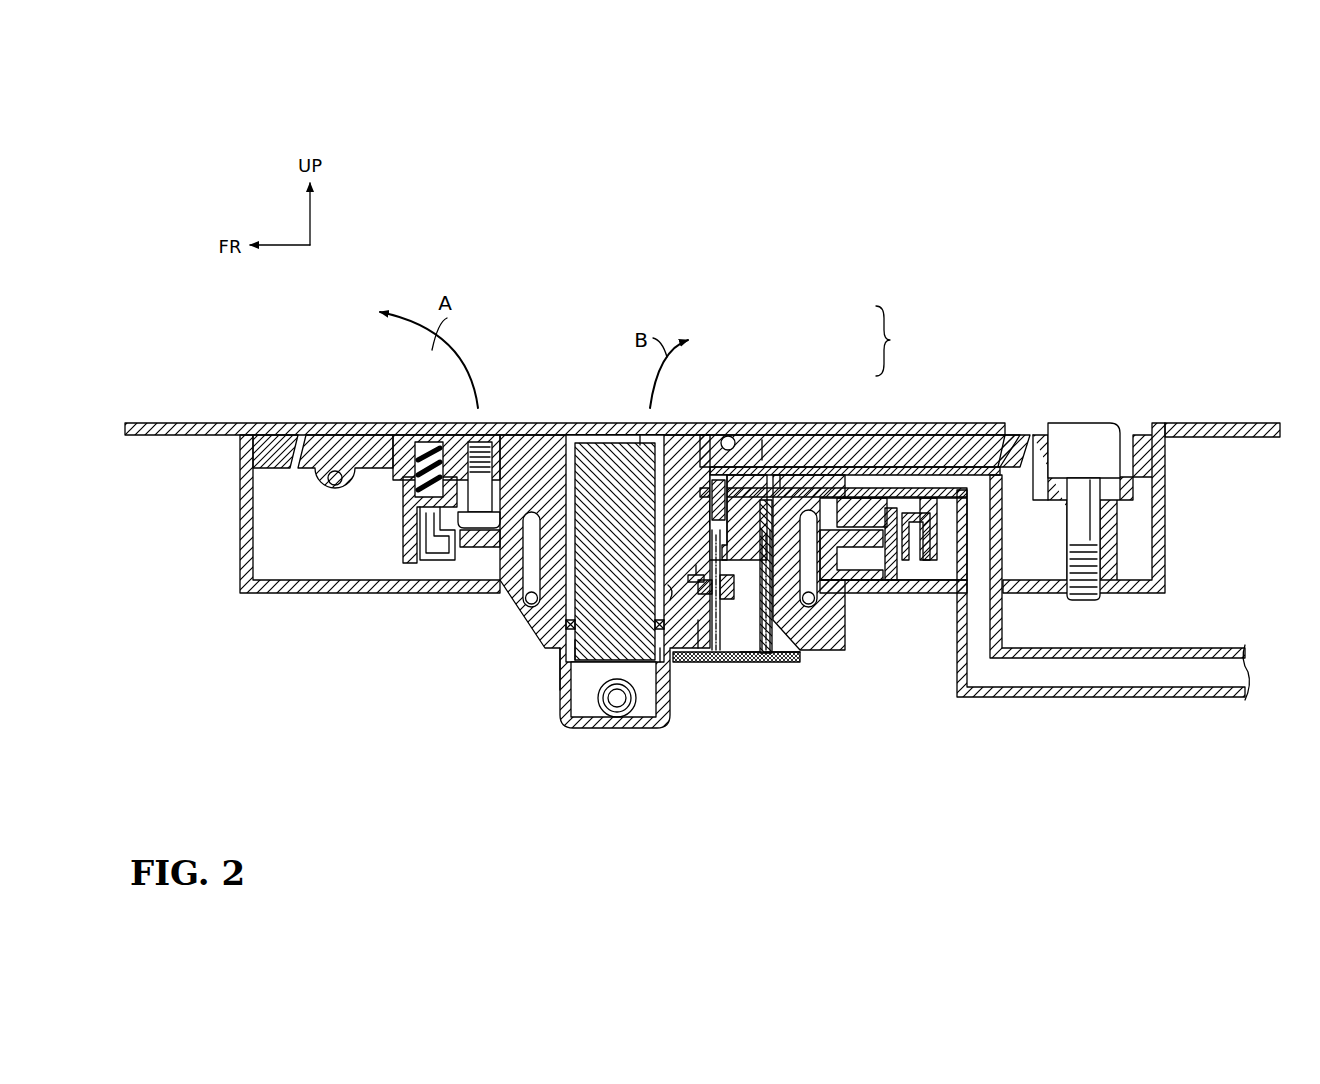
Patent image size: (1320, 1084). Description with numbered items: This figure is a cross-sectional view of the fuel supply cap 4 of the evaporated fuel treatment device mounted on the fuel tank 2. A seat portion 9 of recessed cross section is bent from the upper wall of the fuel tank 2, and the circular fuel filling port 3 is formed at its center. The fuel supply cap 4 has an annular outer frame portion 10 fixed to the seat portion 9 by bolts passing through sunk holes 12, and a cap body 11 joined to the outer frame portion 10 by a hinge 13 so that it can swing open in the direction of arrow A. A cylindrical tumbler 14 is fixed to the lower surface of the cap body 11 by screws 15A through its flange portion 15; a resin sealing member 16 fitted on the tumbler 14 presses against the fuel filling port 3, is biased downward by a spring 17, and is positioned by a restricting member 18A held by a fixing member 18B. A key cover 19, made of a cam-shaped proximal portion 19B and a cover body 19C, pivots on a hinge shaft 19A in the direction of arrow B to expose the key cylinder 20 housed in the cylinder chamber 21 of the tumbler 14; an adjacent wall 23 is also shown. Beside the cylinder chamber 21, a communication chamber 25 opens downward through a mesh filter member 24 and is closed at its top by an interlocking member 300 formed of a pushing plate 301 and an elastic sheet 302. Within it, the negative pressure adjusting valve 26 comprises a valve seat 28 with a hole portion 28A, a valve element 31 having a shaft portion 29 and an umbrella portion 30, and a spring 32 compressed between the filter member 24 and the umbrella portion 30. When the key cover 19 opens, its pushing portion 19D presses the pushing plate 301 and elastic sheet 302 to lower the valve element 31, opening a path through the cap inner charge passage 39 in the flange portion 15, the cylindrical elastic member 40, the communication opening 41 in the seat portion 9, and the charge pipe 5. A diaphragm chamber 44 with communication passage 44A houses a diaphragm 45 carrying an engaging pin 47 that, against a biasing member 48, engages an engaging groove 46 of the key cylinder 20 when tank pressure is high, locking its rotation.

The fuel tank 2 is at (198, 423).
The fuel filling port 3 is at (510, 612).
The fuel supply cap 4 is at (946, 410).
The charge pipe 5 is at (1122, 698).
The seat portion 9 is at (312, 593).
The outer frame portion 10 is at (272, 435).
The cap body 11 is at (343, 435).
The sunk hole 12 is at (1100, 450).
The hinge 13 is at (331, 485).
The tumbler 14 is at (568, 632).
The flange portion 15 is at (525, 468).
The screw 15A is at (512, 480).
The sealing member 16 is at (820, 632).
The spring 17 is at (547, 630).
The restricting member 18A is at (858, 593).
The fixing member 18B is at (914, 562).
The key cover 19 is at (572, 418).
The hinge shaft 19A is at (735, 428).
The proximal portion 19B is at (722, 432).
The cover body 19C is at (588, 420).
The pushing portion 19D is at (763, 428).
The key cylinder 20 is at (614, 705).
The cylinder chamber 21 is at (578, 668).
The wall 23 is at (563, 683).
The filter member 24 is at (750, 662).
The communication chamber 25 is at (768, 662).
The negative pressure adjusting valve 26 is at (692, 430).
The valve seat 28 is at (805, 437).
The hole portion 28A is at (638, 428).
The shaft portion 29 is at (712, 515).
The umbrella portion 30 is at (665, 548).
The valve element 31 is at (745, 428).
The spring 32 is at (735, 662).
The cap inner charge passage 39 is at (915, 475).
The cylindrical elastic member 40 is at (1000, 535).
The communication opening 41 is at (992, 590).
The diaphragm chamber 44 is at (714, 585).
The communication passage 44A is at (657, 690).
The diaphragm 45 is at (712, 600).
The engaging groove 46 is at (658, 598).
The engaging pin 47 is at (672, 582).
The biasing member 48 is at (701, 648).
The interlocking member 300 is at (903, 341).
The pushing plate 301 is at (772, 430).
The elastic sheet 302 is at (810, 428).